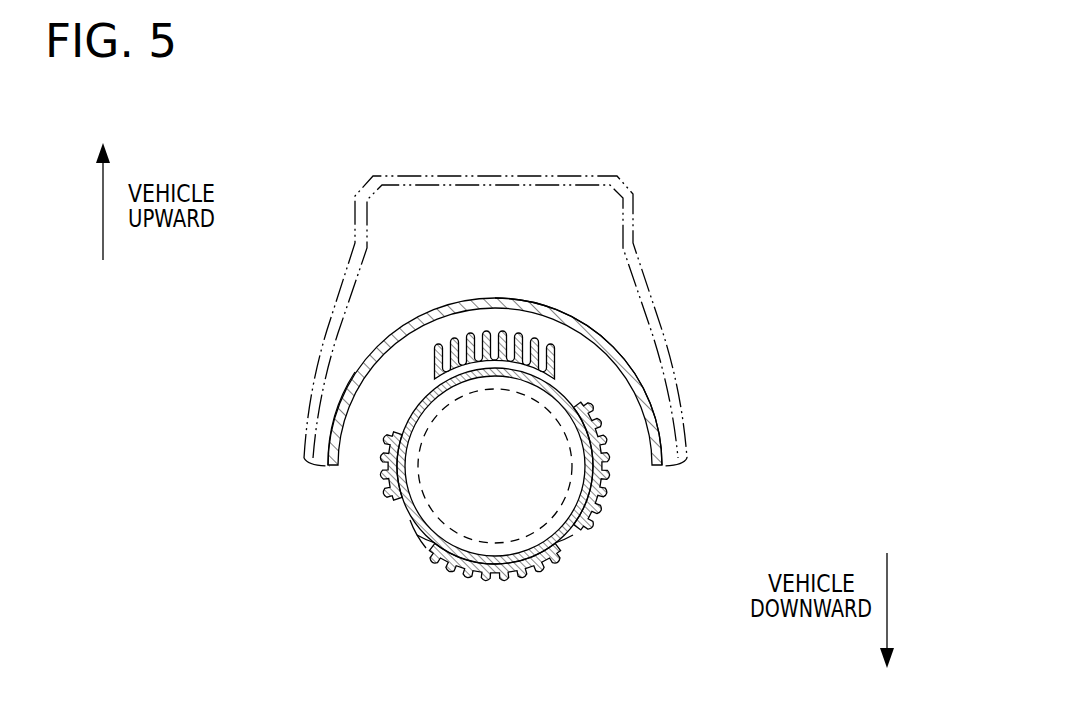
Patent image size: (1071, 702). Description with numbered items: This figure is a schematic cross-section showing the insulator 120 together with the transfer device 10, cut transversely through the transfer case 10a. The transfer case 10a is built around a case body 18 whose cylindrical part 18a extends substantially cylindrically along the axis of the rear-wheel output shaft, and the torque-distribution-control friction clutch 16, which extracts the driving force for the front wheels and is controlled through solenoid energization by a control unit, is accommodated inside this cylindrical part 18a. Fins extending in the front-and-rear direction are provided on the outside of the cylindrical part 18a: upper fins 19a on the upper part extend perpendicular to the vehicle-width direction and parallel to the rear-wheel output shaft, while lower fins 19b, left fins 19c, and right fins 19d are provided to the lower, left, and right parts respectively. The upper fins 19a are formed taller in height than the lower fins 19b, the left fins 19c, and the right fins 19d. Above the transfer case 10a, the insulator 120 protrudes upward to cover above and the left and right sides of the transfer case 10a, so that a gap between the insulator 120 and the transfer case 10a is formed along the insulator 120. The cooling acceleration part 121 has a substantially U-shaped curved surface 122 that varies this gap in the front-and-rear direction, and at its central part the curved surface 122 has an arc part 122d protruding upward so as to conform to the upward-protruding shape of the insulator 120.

The transfer device 10 is at (573, 537).
The transfer case 10a is at (419, 541).
The torque-distribution-control friction clutch 16 is at (572, 472).
The case body 18 is at (558, 556).
The cylindrical part 18a is at (436, 556).
The upper fins 19a is at (438, 345).
The lower fins 19b is at (476, 577).
The left fins 19c is at (383, 490).
The right fins 19d is at (601, 508).
The insulator 120 is at (582, 176).
The cooling acceleration part 121 is at (631, 367).
The curved surface 122 is at (377, 346).
The arc part 122d is at (338, 407).